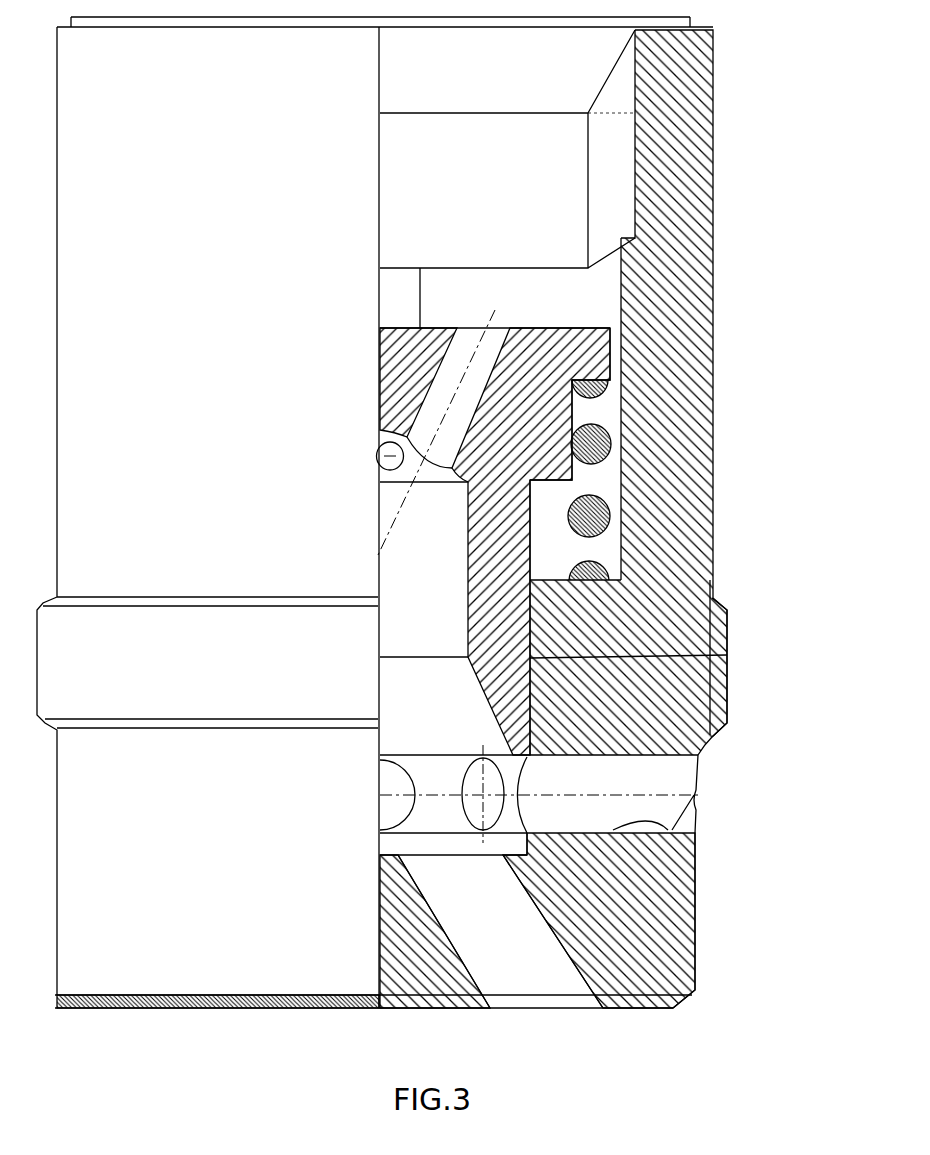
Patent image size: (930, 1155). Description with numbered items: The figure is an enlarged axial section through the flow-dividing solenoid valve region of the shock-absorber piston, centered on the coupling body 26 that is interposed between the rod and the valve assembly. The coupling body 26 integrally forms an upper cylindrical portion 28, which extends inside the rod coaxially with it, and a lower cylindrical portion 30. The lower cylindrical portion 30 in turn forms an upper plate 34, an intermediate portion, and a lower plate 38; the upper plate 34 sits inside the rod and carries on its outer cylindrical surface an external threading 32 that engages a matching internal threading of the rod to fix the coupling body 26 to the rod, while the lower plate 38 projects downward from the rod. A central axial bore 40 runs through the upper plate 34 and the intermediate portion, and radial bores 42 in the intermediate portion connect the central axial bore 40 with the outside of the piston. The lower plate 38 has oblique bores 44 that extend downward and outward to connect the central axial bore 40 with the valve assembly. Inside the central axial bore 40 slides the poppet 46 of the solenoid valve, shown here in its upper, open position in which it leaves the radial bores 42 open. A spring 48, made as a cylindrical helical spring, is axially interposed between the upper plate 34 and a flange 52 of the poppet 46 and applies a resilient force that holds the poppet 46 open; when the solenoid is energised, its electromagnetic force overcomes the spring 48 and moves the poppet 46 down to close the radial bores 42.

The coupling body 26 is at (698, 178).
The upper cylindrical portion 28 is at (690, 125).
The lower cylindrical portion 30 is at (693, 985).
The external threading 32 is at (727, 690).
The upper plate 34 is at (620, 612).
The lower plate 38 is at (698, 752).
The central axial bore 40 is at (727, 655).
The radial bores 42 is at (672, 830).
The oblique bores 44 is at (470, 963).
The poppet 46 is at (552, 413).
The spring 48 is at (597, 498).
The flange 52 is at (600, 355).